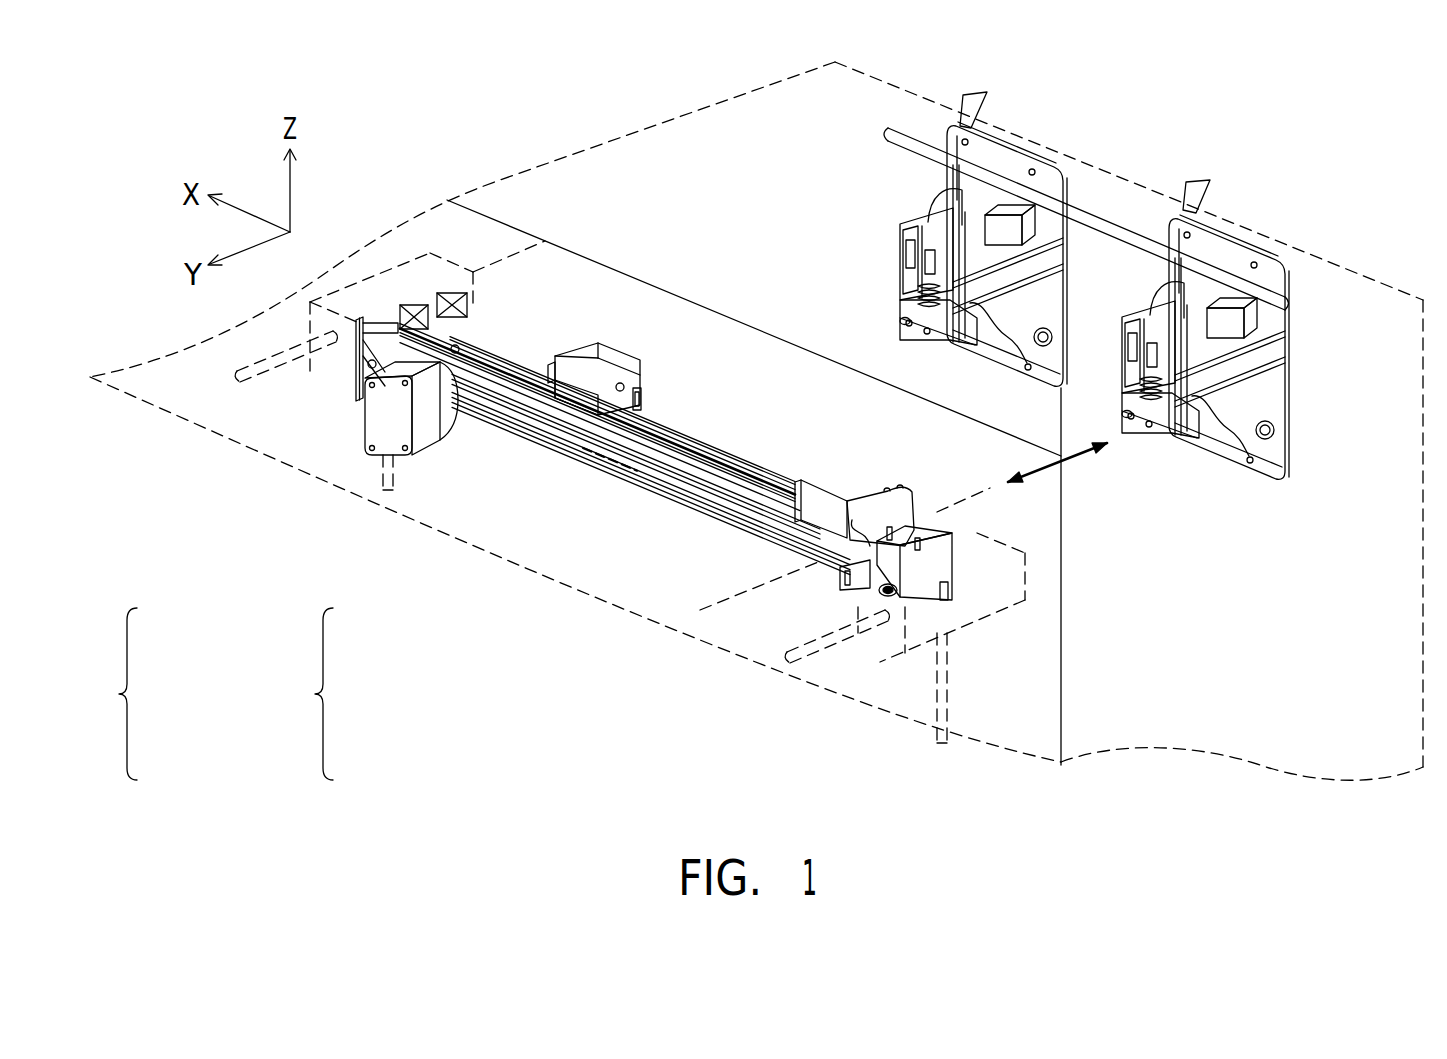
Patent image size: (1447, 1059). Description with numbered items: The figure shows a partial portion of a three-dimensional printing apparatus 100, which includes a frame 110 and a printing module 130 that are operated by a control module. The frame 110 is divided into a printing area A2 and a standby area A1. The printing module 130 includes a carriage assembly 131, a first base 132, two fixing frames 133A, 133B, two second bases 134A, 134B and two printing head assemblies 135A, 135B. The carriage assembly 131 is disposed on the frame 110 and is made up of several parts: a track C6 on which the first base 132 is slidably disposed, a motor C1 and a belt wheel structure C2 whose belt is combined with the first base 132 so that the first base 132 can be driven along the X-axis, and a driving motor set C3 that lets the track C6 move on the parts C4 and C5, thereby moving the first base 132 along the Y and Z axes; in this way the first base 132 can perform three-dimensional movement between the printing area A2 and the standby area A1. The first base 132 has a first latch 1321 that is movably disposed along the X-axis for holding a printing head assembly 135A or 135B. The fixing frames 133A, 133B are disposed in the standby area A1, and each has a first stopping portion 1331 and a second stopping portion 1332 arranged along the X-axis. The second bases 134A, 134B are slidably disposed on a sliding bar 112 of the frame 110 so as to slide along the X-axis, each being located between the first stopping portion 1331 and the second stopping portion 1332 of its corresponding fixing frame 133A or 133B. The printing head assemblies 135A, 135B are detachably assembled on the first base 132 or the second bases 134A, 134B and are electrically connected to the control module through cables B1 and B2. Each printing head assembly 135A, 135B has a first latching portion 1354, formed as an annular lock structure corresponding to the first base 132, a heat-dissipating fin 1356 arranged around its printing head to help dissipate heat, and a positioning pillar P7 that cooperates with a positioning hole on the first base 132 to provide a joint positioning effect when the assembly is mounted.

The 3D printing apparatus 100 is at (1446, 127).
The frame 110 is at (1362, 274).
The sliding bar 112 is at (906, 138).
The printing module 130 is at (709, 406).
The carriage assembly 131 is at (801, 405).
The first base 132 is at (607, 363).
The first latch 1321 is at (643, 402).
The fixing frame 133A is at (1000, 140).
The fixing frame 133B is at (1204, 232).
The second base 134A is at (1003, 215).
The second base 134B is at (1236, 306).
The printing head assembly 135A is at (893, 252).
The printing head assembly 135B is at (1116, 345).
The first stopping portion 1331 is at (960, 306).
The second stopping portion 1332 is at (932, 195).
The first latching portion 1354 is at (915, 233).
The heat-dissipating fin 1356 is at (900, 320).
The positioning pillar P7 is at (928, 333).
The standby area A1 is at (1058, 466).
The printing area A2 is at (1016, 504).
The cable B1 is at (965, 90).
The cable B2 is at (1189, 178).
The motor C1 is at (418, 434).
The belt wheel structure C2 is at (532, 430).
The driving motor set C3 is at (433, 253).
The part of carriage assembly C4 is at (274, 382).
The part of carriage assembly C5 is at (382, 474).
The track C6 is at (728, 454).